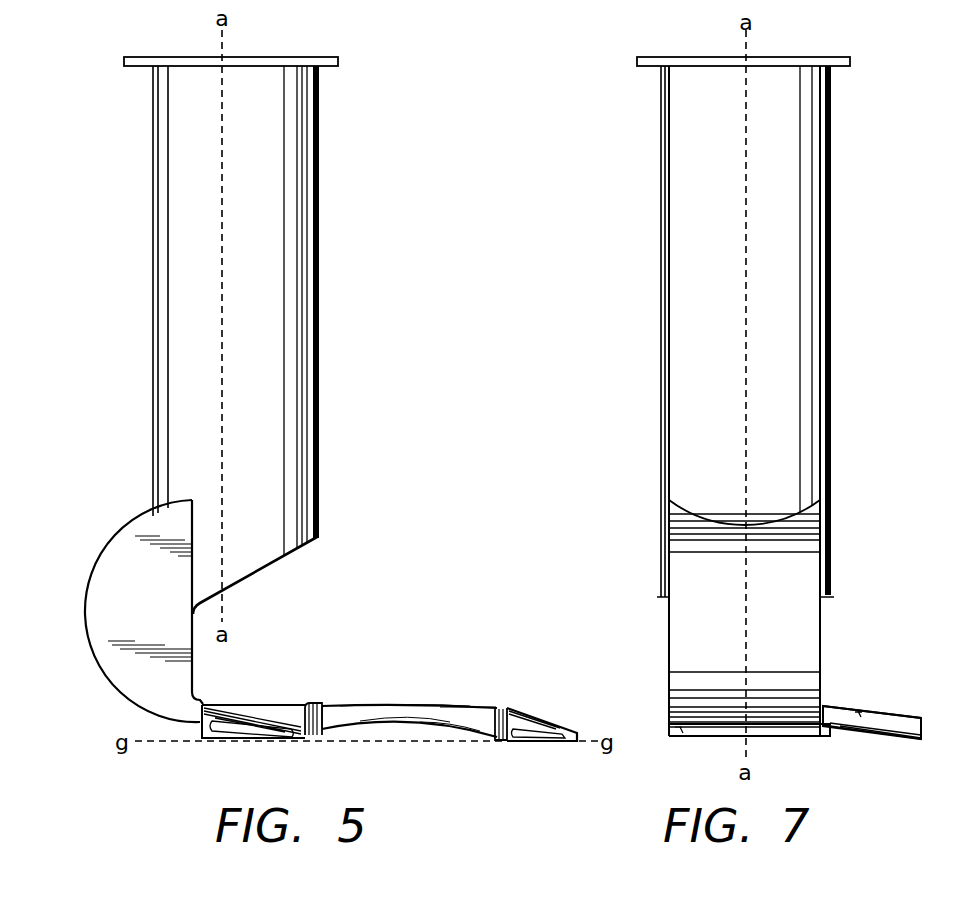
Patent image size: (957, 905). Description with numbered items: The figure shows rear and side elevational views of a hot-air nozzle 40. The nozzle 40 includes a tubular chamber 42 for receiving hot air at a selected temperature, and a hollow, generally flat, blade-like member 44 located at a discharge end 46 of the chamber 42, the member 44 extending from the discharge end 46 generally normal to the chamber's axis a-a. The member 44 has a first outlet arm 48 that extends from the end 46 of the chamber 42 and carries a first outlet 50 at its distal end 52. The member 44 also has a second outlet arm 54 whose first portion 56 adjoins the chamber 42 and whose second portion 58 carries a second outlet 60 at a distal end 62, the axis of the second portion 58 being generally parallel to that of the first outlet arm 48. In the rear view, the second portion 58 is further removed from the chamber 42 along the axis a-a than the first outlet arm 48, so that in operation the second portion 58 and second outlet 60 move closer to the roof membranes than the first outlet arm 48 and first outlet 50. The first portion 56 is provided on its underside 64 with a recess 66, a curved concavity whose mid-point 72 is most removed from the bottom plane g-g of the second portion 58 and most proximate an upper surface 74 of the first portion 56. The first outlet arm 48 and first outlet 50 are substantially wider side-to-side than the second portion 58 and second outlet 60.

In FIG. 5, the nozzle 40 is at (268, 40).
In FIG. 7, the nozzle 40 is at (789, 40).
In FIG. 5, the tubular chamber 42 is at (152, 263).
In FIG. 7, the tubular chamber 42 is at (664, 262).
In FIG. 5, the blade-like member 44 is at (456, 706).
In FIG. 7, the blade-like member 44 is at (844, 705).
In FIG. 5, the discharge end 46 is at (127, 694).
In FIG. 7, the discharge end 46 is at (665, 658).
In FIG. 5, the first outlet arm 48 is at (201, 737).
In FIG. 7, the first outlet arm 48 is at (880, 712).
In FIG. 5, the first outlet 50 is at (232, 731).
In FIG. 7, the first outlet 50 is at (921, 730).
In FIG. 5, the distal end 52 is at (279, 742).
In FIG. 7, the distal end 52 is at (908, 742).
In FIG. 5, the second outlet arm 54 is at (398, 705).
In FIG. 7, the second outlet arm 54 is at (718, 737).
In FIG. 5, the first portion 56 is at (338, 704).
In FIG. 5, the second portion 58 is at (532, 716).
In FIG. 7, the second portion 58 is at (784, 738).
In FIG. 5, the second outlet 60 is at (535, 739).
In FIG. 7, the second outlet 60 is at (836, 737).
In FIG. 5, the distal end 62 is at (516, 742).
In FIG. 7, the distal end 62 is at (825, 747).
In FIG. 5, the underside 64 is at (336, 731).
In FIG. 5, the recess 66 is at (405, 726).
In FIG. 5, the mid-point 72 is at (432, 729).
In FIG. 5, the upper surface 74 is at (376, 705).